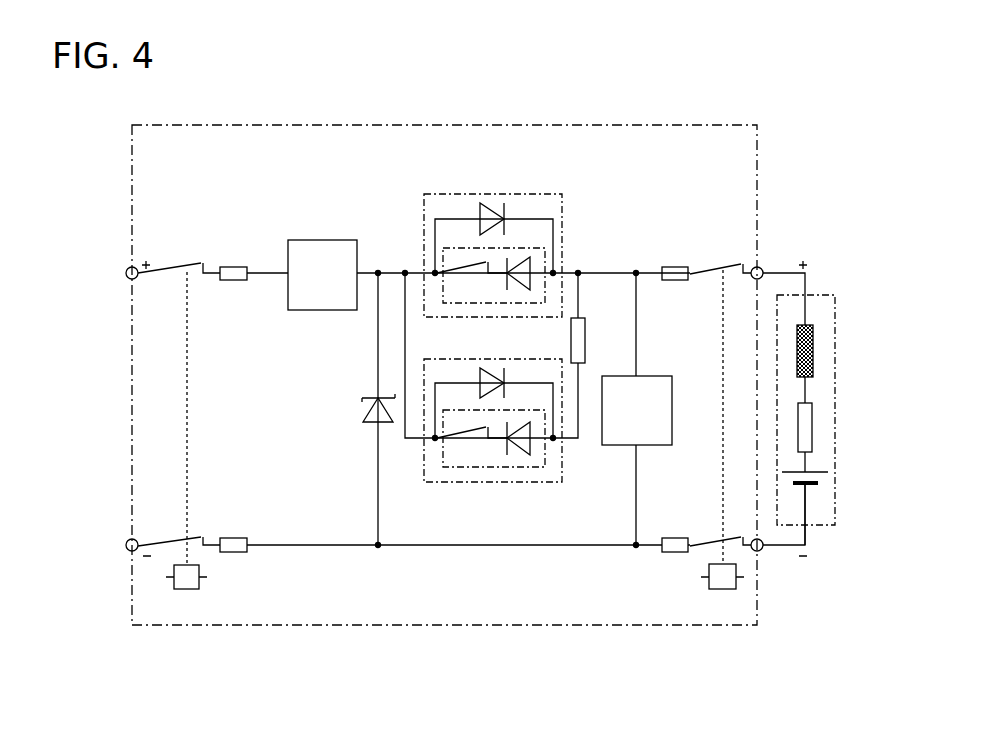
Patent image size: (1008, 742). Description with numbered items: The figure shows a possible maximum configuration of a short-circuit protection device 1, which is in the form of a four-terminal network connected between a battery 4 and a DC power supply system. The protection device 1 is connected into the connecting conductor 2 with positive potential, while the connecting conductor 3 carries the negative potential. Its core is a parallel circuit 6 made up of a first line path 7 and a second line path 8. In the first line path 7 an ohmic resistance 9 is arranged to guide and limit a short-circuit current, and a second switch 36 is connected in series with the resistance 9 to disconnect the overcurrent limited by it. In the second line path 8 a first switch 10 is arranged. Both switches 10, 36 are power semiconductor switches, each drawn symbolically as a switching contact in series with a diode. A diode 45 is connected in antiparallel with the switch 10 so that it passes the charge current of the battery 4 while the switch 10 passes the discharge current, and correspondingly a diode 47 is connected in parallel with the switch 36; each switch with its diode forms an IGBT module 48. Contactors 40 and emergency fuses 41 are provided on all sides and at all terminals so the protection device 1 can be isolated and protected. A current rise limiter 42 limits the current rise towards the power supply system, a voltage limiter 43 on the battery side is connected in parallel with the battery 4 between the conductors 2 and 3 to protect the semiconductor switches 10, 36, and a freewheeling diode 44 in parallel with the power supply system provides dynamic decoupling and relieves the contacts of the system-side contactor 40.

The short-circuit protection device 1 is at (757, 182).
The connecting conductor 2 is at (769, 268).
The connecting conductor 3 is at (760, 552).
The battery 4 is at (835, 372).
The parallel circuit 6 is at (519, 338).
The first line path 7 is at (578, 300).
The second line path 8 is at (578, 272).
The ohmic resistance 9 is at (586, 342).
The first switch 10 is at (546, 255).
The second switch 36 is at (524, 468).
The contactor 40 is at (200, 587).
The emergency fuse 41 is at (233, 265).
The current rise limiter 42 is at (322, 240).
The voltage limiter 43 is at (652, 376).
The freewheeling diode 44 is at (362, 414).
The diode 45 is at (494, 202).
The diode 47 is at (491, 368).
The IGBT module 48 is at (519, 338).